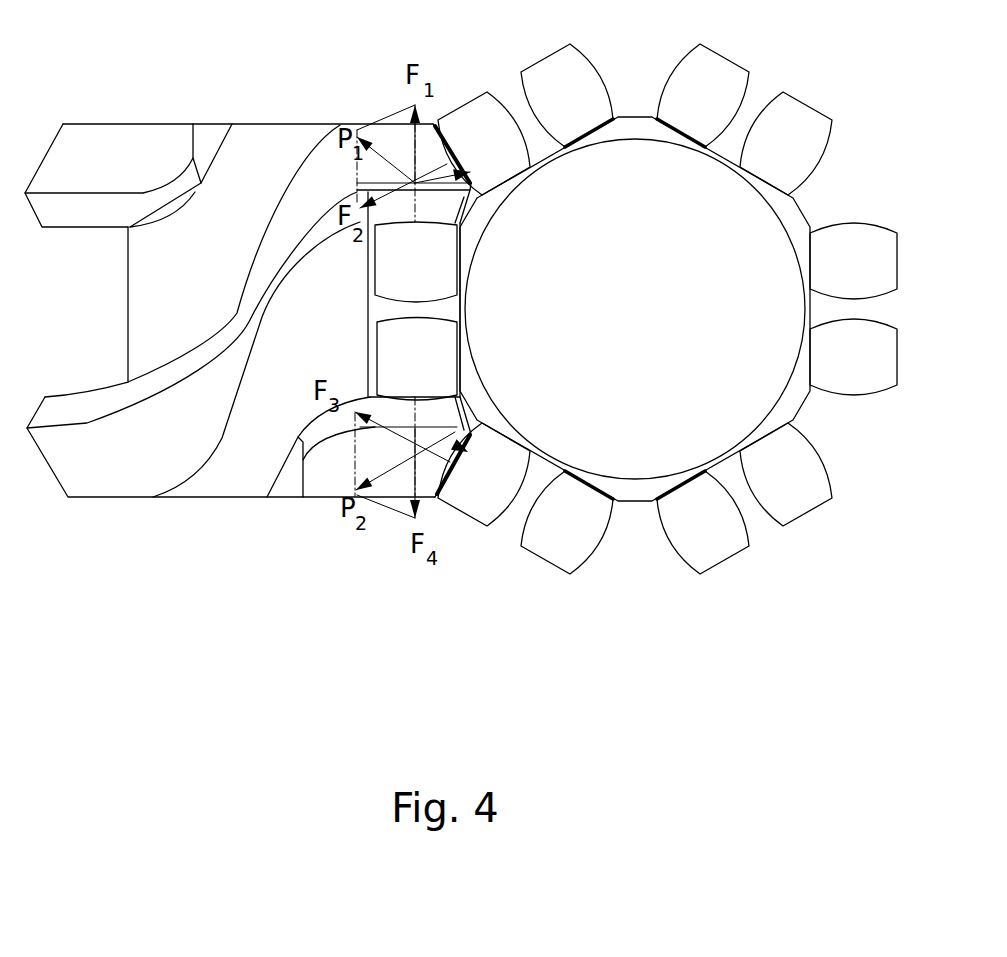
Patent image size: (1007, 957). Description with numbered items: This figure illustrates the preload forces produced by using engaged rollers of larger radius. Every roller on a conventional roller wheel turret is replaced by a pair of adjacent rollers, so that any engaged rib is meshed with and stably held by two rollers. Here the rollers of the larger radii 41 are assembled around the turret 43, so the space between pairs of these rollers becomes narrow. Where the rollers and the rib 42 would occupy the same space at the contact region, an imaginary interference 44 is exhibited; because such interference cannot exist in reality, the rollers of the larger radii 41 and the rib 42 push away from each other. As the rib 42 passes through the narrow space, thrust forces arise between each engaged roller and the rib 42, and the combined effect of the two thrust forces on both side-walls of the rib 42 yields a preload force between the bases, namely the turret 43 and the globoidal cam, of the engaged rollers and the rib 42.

The rollers of the larger radii 41 is at (636, 309).
The rib 42 is at (180, 427).
The turret 43 is at (733, 378).
The imaginary interference 44 is at (422, 223).